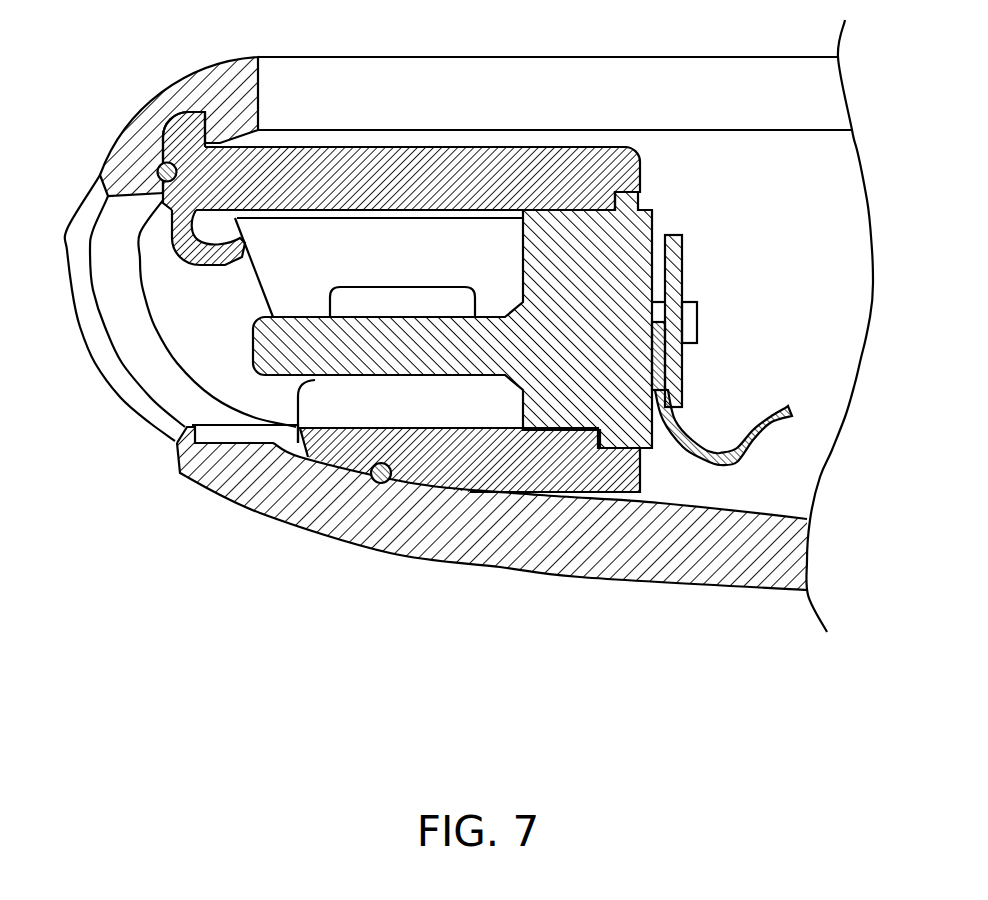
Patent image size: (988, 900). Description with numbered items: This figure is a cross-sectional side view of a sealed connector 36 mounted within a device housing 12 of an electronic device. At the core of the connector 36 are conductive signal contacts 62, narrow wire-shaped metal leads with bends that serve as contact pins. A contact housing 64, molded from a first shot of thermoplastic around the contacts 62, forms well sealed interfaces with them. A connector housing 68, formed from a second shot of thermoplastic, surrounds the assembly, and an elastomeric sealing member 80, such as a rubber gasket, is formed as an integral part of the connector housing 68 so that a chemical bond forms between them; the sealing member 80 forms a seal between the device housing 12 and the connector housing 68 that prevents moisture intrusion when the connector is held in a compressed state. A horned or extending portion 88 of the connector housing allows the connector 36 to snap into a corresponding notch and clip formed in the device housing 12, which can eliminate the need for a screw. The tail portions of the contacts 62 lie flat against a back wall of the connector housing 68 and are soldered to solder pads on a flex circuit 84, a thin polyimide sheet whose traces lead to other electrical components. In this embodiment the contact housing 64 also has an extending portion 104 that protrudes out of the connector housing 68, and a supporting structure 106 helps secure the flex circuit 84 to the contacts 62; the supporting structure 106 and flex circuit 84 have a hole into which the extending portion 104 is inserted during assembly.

The device housing 12 is at (223, 88).
The sealed connector 36 is at (146, 323).
The conductive signal contacts 62 is at (663, 392).
The contact housing 64 is at (572, 260).
The connector housing 68 is at (463, 150).
The sealing member 80 is at (157, 173).
The flex circuit 84 is at (758, 432).
The horned portion 88 is at (177, 138).
The extending portion 104 is at (690, 320).
The supporting structure 106 is at (683, 262).